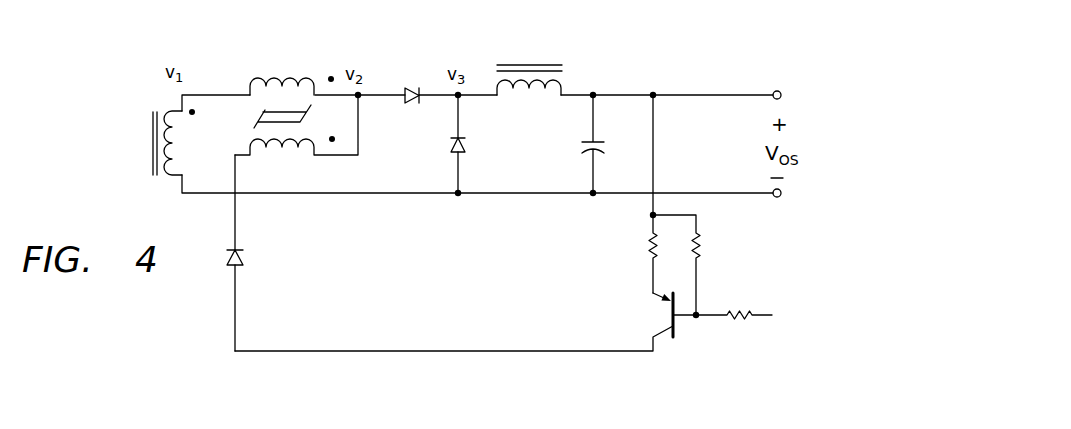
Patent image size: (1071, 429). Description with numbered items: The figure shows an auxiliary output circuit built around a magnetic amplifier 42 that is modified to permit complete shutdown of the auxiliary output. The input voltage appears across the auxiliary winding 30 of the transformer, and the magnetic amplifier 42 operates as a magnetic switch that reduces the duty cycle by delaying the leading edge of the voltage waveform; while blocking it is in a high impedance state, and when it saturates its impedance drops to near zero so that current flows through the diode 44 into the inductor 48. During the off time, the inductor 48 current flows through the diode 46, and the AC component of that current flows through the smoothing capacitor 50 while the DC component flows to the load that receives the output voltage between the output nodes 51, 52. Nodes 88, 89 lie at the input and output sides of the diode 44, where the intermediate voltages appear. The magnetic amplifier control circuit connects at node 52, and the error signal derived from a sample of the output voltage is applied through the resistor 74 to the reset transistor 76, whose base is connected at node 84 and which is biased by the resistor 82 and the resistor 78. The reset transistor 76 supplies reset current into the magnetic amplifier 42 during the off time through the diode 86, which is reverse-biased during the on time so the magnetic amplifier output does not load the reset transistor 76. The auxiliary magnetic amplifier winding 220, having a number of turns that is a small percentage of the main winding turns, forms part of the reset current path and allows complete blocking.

The auxiliary winding 30 is at (134, 159).
The magnetic amplifier 42 is at (243, 59).
The diode 44 is at (418, 86).
The diode 46 is at (453, 146).
The inductor 48 is at (523, 108).
The smoothing capacitor 50 is at (581, 148).
The output node 51 is at (595, 91).
The node 52 is at (656, 91).
The resistor 74 is at (747, 308).
The reset transistor 76 is at (686, 338).
The resistor 78 is at (650, 250).
The bias resistor 82 is at (700, 247).
The base node 84 is at (698, 312).
The diode 86 is at (245, 253).
The node v2 88 is at (360, 97).
The node v3 89 is at (457, 98).
The auxiliary magnetic amplifier winding 220 is at (313, 167).